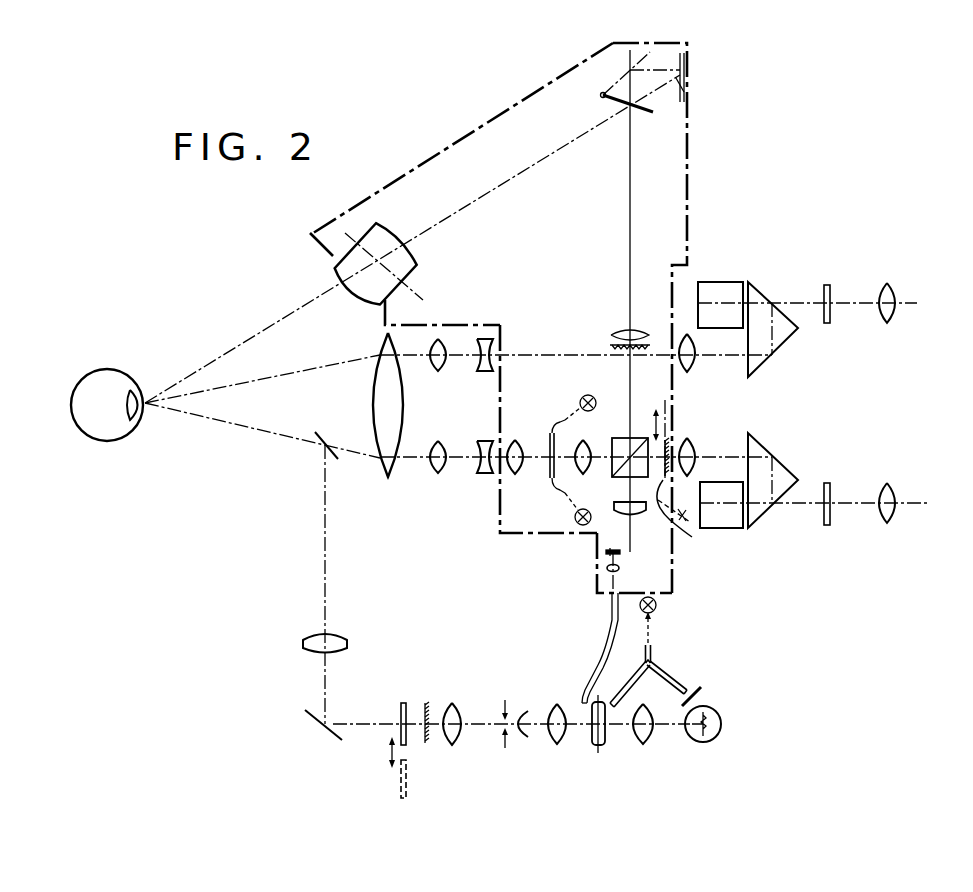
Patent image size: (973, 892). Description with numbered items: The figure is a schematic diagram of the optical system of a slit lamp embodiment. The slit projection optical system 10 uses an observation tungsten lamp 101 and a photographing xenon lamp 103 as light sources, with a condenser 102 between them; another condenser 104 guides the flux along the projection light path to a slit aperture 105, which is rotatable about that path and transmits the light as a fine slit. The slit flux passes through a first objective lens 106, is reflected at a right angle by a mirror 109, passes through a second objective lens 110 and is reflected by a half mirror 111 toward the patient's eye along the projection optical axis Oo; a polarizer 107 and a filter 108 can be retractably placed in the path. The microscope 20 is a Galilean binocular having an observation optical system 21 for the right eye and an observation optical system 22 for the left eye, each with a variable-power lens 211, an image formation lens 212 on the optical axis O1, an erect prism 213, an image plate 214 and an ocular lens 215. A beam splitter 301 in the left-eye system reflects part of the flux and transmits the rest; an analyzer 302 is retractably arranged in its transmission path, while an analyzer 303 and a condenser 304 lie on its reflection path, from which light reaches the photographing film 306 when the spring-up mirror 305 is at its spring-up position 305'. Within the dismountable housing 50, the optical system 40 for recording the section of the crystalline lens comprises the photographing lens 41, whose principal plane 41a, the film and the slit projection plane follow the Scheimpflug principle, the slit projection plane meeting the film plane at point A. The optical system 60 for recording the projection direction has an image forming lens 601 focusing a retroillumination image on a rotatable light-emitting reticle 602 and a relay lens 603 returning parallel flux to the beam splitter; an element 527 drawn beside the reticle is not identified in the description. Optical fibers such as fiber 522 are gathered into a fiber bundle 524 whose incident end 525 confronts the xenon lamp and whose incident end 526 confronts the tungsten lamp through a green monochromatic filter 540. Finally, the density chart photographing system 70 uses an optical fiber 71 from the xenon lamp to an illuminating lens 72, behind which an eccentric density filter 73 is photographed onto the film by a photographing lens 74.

The slit projection optical system 10 is at (587, 770).
The microscope 20 is at (864, 410).
The observation optical system for the right eye 21 is at (790, 366).
The observation optical system for the left eye 22 is at (810, 459).
The optical system for recording the section of the crystalline lens 40 is at (473, 193).
The photographing lens 41 is at (402, 232).
The principal plane of the photographing lens 41a is at (423, 298).
The housing 50 is at (487, 127).
The optical system for observing and recording the projection direction 60 is at (548, 415).
The density chart photographing system 70 is at (655, 569).
The optical fiber 71 is at (594, 656).
The illuminating lens 72 is at (606, 569).
The density filter 73 is at (606, 552).
The photographing lens 74 is at (637, 513).
The observation tungsten lamp 101 is at (709, 742).
The condenser 102 is at (651, 741).
The photographing xenon lamp 103 is at (606, 741).
The condenser 104 is at (556, 745).
The slit aperture 105 is at (504, 750).
The first objective lens 106 is at (455, 706).
The polarizer 107 is at (426, 744).
The filter 108 is at (403, 703).
The mirror 109 is at (334, 742).
The second objective lens 110 is at (347, 644).
The half mirror 111 is at (330, 433).
The variable-power lens 211 is at (483, 474).
The image formation lens 212 is at (692, 440).
The erect prism 213 is at (730, 528).
The image plate 214 is at (832, 527).
The ocular lens 215 is at (892, 523).
The beam splitter 301 is at (619, 437).
The analyzer 302 is at (668, 478).
The analyzer 303 is at (610, 336).
The condenser 304 is at (618, 340).
The spring-up mirror 305 is at (637, 125).
The spring-up position 305' is at (586, 73).
The photographing film 306 is at (685, 78).
The optical fiber 522 is at (553, 421).
The fiber bundle 524 is at (657, 645).
The incident end 525 is at (611, 705).
The incident end 526 is at (686, 690).
The pivot 527 is at (556, 493).
The monochromatic filter 540 is at (700, 686).
The image forming lens 601 is at (508, 470).
The reticle 602 is at (549, 465).
The relay lens 603 is at (590, 472).
The point A is at (686, 510).
The projection optical axis Oo is at (268, 438).
The optical axis of the variable-power lens O1 is at (410, 470).